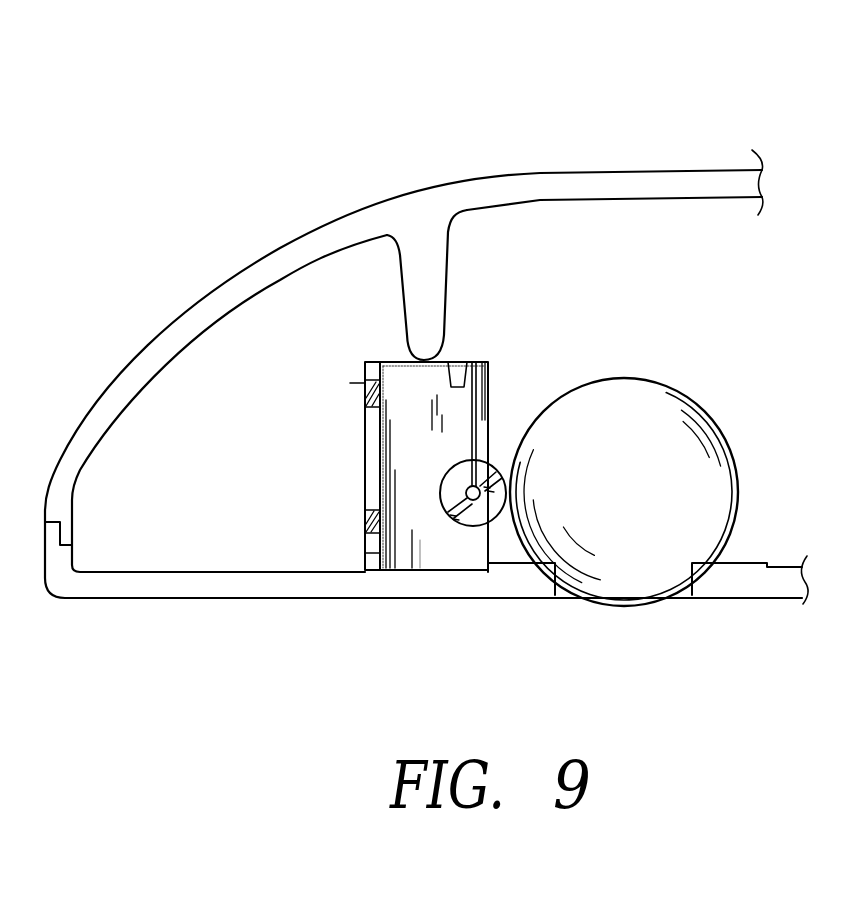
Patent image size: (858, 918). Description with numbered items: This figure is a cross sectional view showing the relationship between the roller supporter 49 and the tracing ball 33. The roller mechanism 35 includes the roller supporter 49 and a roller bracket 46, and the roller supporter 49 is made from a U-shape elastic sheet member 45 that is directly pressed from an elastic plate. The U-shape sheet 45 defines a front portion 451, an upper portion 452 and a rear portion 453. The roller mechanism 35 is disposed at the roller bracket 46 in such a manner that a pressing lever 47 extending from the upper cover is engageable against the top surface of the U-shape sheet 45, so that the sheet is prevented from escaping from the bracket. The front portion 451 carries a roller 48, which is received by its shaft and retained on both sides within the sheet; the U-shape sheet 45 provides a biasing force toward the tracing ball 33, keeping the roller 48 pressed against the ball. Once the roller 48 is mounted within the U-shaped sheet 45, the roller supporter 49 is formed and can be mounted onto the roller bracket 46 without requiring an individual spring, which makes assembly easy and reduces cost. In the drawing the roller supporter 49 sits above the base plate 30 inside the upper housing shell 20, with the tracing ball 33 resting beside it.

The upper housing shell 20 is at (470, 167).
The base plate 30 is at (330, 604).
The tracing ball 33 is at (675, 483).
The roller mechanism 35 is at (308, 537).
The U-shape elastic sheet member 45 is at (458, 352).
The roller bracket 46 is at (363, 440).
The pressing lever 47 is at (417, 317).
The roller 48 is at (494, 522).
The roller supporter 49 is at (434, 524).
The front portion 451 is at (478, 487).
The upper portion 452 is at (412, 360).
The rear portion 453 is at (364, 378).